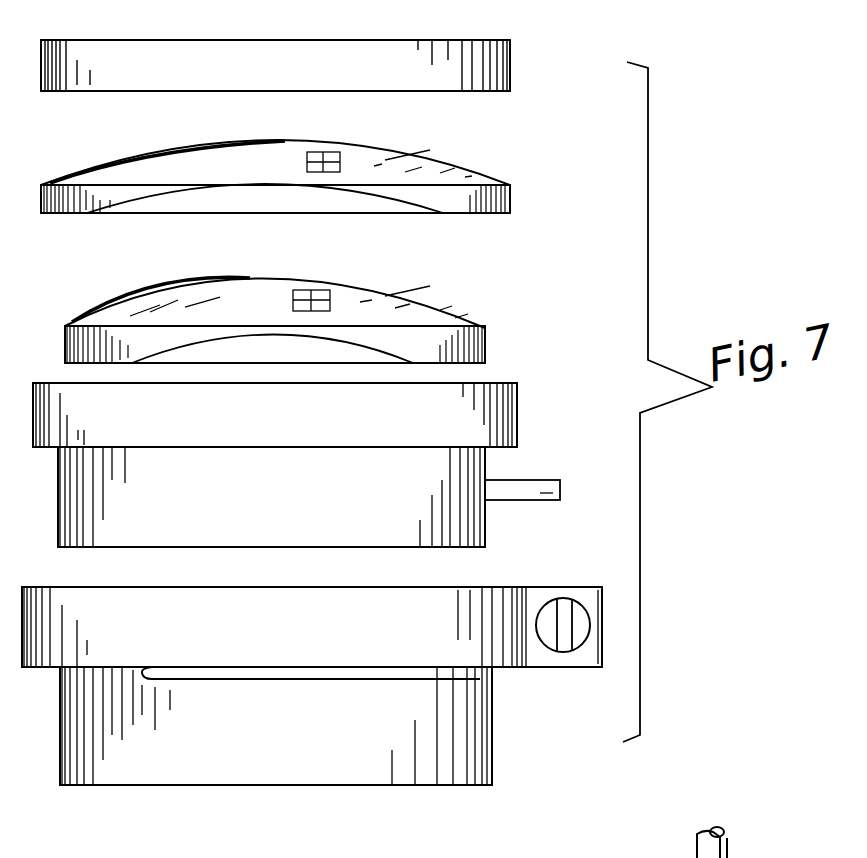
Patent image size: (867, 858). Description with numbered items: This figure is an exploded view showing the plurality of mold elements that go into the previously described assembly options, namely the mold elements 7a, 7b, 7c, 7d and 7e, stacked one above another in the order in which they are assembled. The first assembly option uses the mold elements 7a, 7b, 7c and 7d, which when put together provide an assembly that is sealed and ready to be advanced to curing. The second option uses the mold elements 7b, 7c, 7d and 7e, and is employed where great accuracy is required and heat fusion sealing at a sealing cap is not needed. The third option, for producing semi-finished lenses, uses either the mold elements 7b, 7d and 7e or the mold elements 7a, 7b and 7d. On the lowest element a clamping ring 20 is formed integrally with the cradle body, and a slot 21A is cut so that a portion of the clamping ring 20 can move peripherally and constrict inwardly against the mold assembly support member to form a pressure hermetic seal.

The clamping ring 20 is at (331, 596).
The slot 21A is at (480, 672).
The mold element 7a is at (305, 65).
The mold element 7b is at (302, 179).
The mold element 7c is at (303, 320).
The mold element 7d is at (296, 465).
The mold element 7e is at (304, 726).